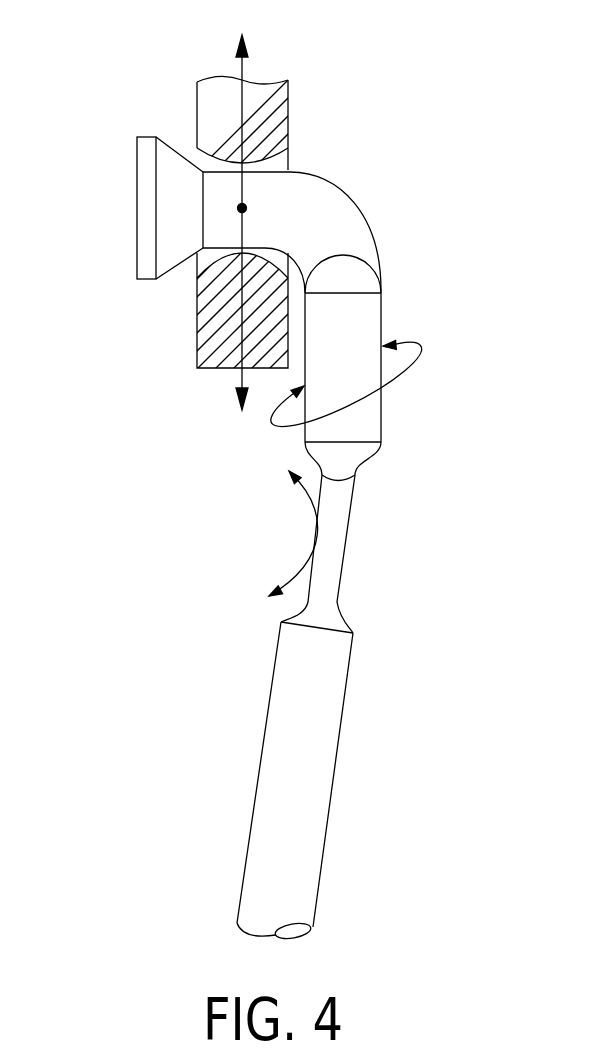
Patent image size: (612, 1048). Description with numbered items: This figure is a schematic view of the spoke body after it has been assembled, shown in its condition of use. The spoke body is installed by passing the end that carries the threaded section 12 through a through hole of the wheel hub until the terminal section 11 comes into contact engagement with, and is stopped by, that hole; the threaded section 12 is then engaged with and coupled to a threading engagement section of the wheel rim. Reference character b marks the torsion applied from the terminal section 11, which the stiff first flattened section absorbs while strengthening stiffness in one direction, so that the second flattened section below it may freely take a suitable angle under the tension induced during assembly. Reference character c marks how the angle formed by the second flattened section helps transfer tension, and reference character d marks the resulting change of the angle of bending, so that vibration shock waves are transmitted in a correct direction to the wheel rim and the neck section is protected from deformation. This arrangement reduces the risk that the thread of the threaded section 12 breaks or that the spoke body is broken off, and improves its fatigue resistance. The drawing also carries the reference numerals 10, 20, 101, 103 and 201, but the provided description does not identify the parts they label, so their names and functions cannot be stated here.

The handle 10 is at (337, 762).
The terminal section 11 is at (405, 392).
The threaded section 12 is at (365, 551).
The clamping die 20 is at (302, 222).
The flange 101 is at (146, 212).
The bent elbow portion 103 is at (337, 223).
The groove of die 201 is at (272, 160).
The torsion direction b is at (423, 342).
The tension transfer direction c is at (242, 63).
The bending angle change d is at (307, 492).